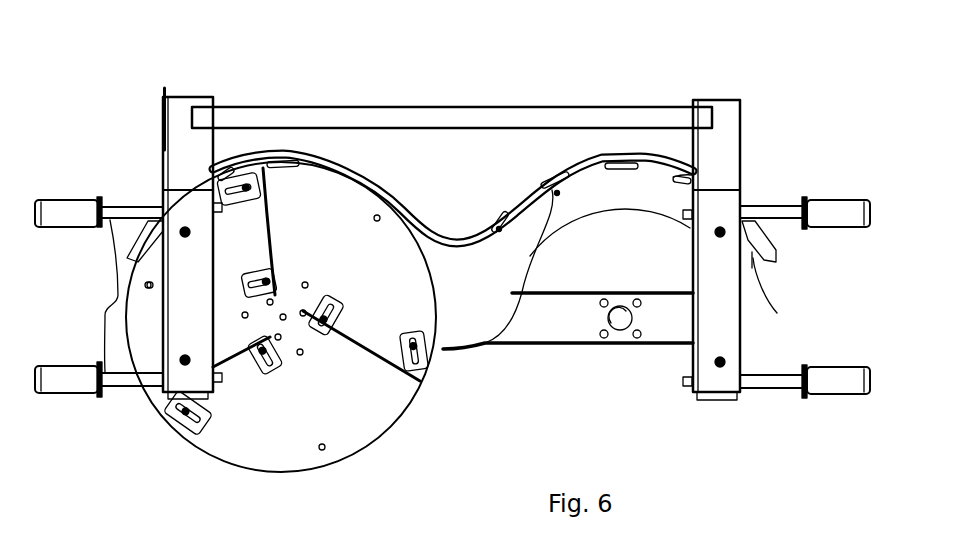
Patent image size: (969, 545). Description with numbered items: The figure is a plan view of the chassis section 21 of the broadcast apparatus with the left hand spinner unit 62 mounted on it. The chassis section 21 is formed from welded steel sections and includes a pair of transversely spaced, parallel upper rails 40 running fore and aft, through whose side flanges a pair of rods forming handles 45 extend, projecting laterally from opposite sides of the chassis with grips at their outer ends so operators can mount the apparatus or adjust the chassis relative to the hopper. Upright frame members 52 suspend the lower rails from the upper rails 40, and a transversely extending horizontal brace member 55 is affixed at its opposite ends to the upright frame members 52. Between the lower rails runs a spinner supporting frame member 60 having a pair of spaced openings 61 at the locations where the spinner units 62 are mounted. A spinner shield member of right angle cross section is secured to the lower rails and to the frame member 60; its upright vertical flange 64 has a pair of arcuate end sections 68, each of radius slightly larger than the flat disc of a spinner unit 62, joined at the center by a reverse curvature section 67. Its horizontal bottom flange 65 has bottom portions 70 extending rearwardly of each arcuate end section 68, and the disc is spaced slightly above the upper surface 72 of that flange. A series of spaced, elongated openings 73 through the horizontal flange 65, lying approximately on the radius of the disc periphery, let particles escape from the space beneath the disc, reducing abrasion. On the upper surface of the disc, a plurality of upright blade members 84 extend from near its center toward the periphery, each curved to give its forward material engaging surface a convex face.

The chassis section 21 is at (440, 92).
The upper rail 40 is at (152, 342).
The handle 45 is at (108, 305).
The upright frame member 52 is at (160, 117).
The horizontal brace member 55 is at (547, 107).
The spinner supporting frame member 60 is at (510, 345).
The opening 61 is at (630, 331).
The spinner unit 62 is at (376, 170).
The upright vertical flange 64 is at (780, 244).
The horizontal bottom flange 65 is at (777, 313).
The reverse curvature section 67 is at (453, 240).
The arcuate end section 68 is at (265, 165).
The bottom portion 70 is at (557, 195).
The upper surface 72 is at (310, 413).
The opening 73 is at (499, 231).
The blade member 84 is at (277, 238).